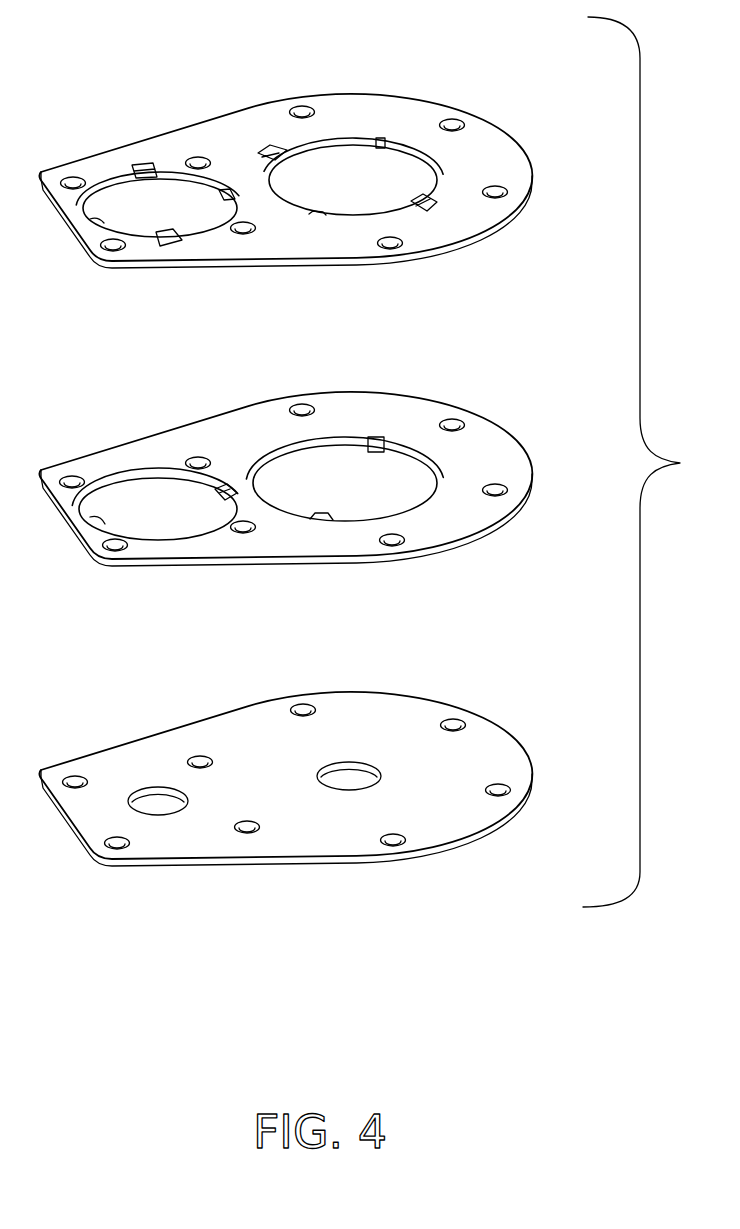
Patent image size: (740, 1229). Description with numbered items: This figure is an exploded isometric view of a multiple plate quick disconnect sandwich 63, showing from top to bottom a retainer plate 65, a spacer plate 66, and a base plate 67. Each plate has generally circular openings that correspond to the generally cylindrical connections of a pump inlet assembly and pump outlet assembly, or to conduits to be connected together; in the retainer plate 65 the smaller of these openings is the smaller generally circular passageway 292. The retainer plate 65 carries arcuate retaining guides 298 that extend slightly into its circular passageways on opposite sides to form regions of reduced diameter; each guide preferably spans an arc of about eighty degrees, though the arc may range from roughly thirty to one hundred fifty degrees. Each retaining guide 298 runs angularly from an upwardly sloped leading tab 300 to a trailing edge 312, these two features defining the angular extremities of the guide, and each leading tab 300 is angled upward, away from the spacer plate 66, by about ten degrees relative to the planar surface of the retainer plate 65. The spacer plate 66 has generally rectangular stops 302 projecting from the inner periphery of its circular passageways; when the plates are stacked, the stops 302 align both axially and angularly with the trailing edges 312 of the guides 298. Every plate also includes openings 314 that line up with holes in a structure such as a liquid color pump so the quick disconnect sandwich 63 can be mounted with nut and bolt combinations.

The multiple plate quick disconnect sandwich 63 is at (647, 462).
The retainer plate 65 is at (488, 152).
The spacer plate 66 is at (462, 445).
The base plate 67 is at (487, 743).
The smaller generally circular passageway 292 is at (128, 203).
The arcuate retaining guide 298 is at (168, 173).
The upwardly sloped leading tab 300 is at (147, 163).
The stop 302 is at (217, 490).
The trailing edge 312 is at (377, 138).
The opening 314 is at (495, 192).